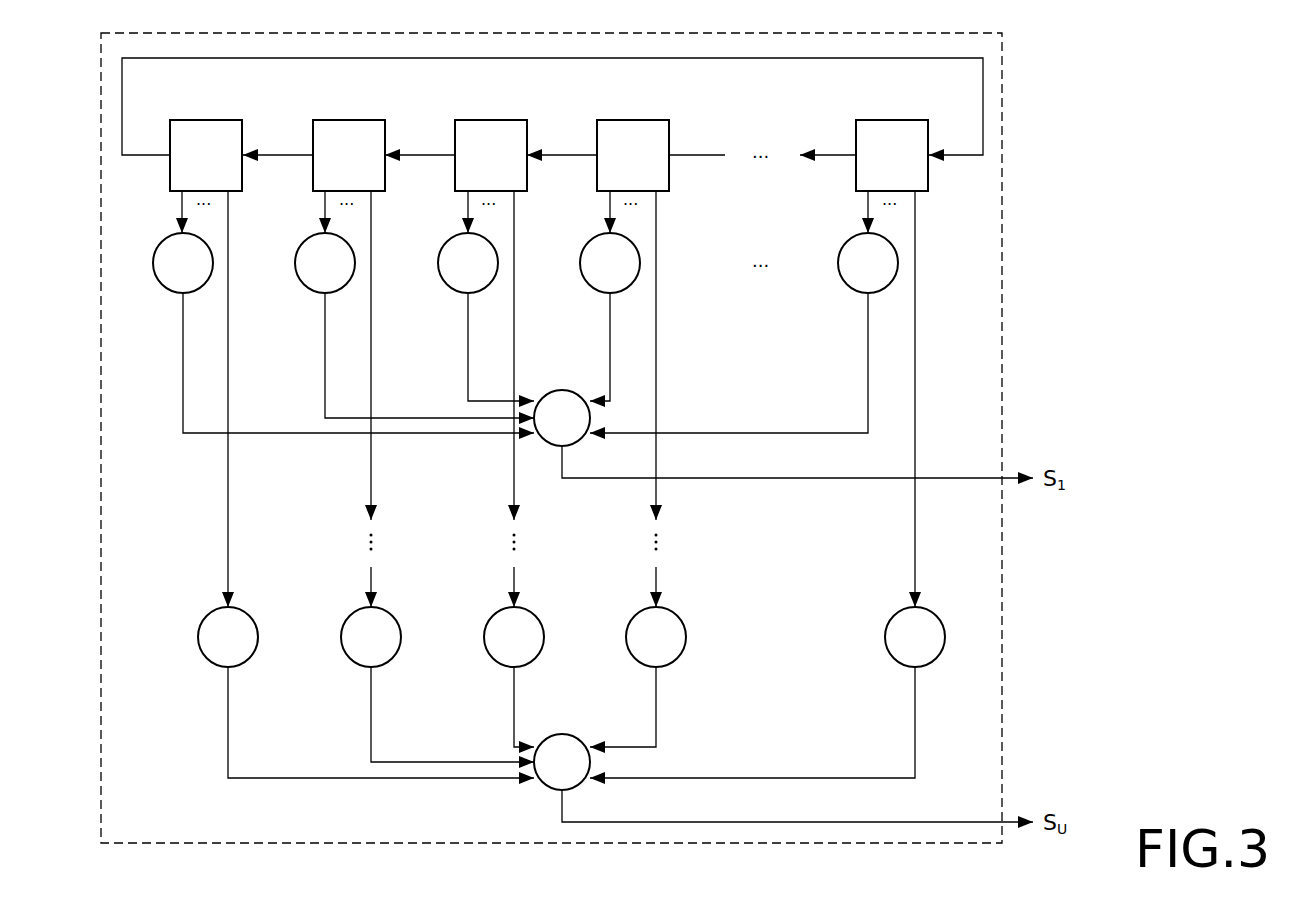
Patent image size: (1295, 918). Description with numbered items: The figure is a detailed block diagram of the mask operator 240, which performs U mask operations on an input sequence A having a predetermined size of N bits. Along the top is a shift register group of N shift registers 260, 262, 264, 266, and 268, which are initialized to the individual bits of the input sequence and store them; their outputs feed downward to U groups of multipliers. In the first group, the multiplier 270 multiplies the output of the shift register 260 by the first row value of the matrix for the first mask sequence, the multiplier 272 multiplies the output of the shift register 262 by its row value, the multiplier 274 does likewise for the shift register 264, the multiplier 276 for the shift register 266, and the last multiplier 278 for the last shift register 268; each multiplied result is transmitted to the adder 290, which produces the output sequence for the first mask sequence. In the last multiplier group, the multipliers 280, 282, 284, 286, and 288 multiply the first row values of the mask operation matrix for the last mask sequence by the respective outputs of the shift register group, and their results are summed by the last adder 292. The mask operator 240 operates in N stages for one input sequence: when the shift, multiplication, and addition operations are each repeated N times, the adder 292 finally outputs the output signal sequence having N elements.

The mask operator 240 is at (1002, 105).
The shift register 260 is at (205, 120).
The shift register 262 is at (348, 120).
The shift register 264 is at (490, 120).
The shift register 266 is at (632, 120).
The shift register 268 is at (892, 120).
The multiplier 270 is at (166, 293).
The multiplier 272 is at (308, 293).
The multiplier 274 is at (451, 293).
The multiplier 276 is at (593, 293).
The multiplier 278 is at (851, 293).
The multiplier 280 is at (211, 667).
The multiplier 282 is at (354, 667).
The multiplier 284 is at (497, 667).
The multiplier 286 is at (639, 667).
The multiplier 288 is at (898, 667).
The adder 290 is at (563, 390).
The adder 292 is at (563, 734).